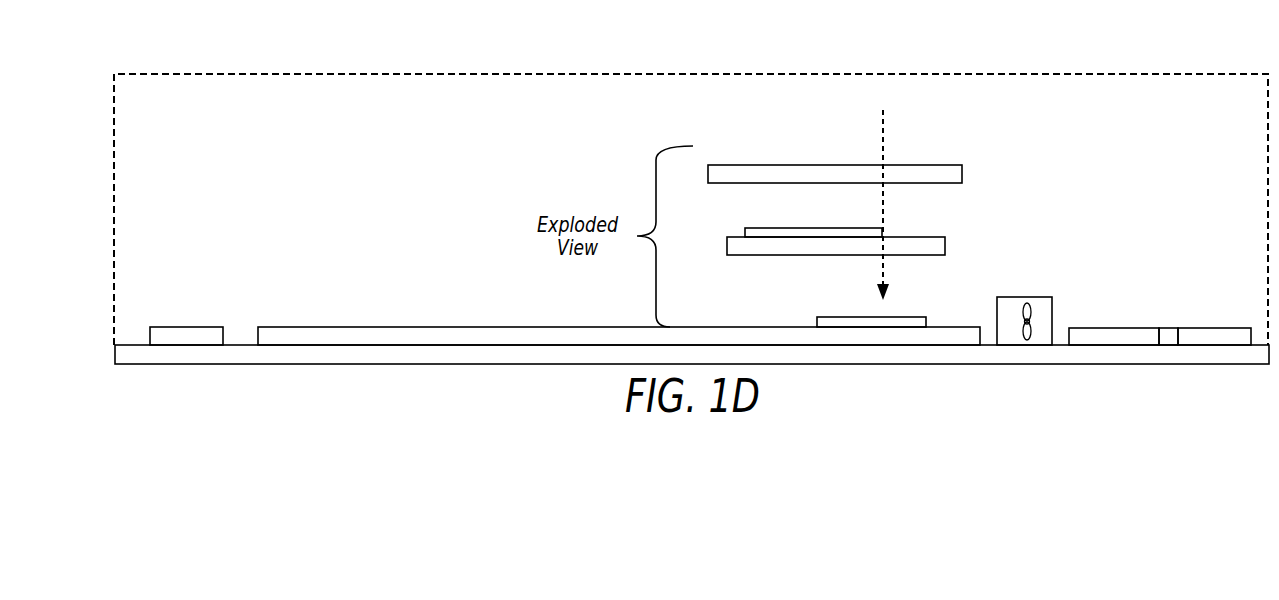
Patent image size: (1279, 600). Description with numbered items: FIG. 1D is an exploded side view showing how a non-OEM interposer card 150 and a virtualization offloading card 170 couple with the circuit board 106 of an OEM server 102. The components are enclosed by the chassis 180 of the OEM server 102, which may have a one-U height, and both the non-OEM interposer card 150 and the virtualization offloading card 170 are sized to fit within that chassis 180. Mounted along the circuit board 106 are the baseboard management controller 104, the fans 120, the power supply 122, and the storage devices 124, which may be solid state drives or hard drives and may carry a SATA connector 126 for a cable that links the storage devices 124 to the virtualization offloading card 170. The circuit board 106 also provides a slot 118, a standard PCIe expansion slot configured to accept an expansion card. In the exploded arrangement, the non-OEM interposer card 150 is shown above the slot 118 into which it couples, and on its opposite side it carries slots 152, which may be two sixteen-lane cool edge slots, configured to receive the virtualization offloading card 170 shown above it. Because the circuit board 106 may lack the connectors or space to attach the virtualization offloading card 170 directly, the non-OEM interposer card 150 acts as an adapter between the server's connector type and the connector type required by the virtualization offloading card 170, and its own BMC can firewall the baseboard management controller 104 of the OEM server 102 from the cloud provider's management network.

The chassis 180 is at (240, 73).
The OEM server 102 is at (113, 356).
The baseboard management controller 104 is at (182, 326).
The circuit board 106 is at (303, 326).
The slot 118 is at (904, 311).
The fans 120 is at (1031, 296).
The power supply 122 is at (1115, 327).
The storage devices 124 is at (1217, 327).
The SATA connector 126 is at (1167, 327).
The non-OEM interposer card 150 is at (905, 236).
The slots 152 is at (745, 229).
The virtualization offloading card 170 is at (763, 165).